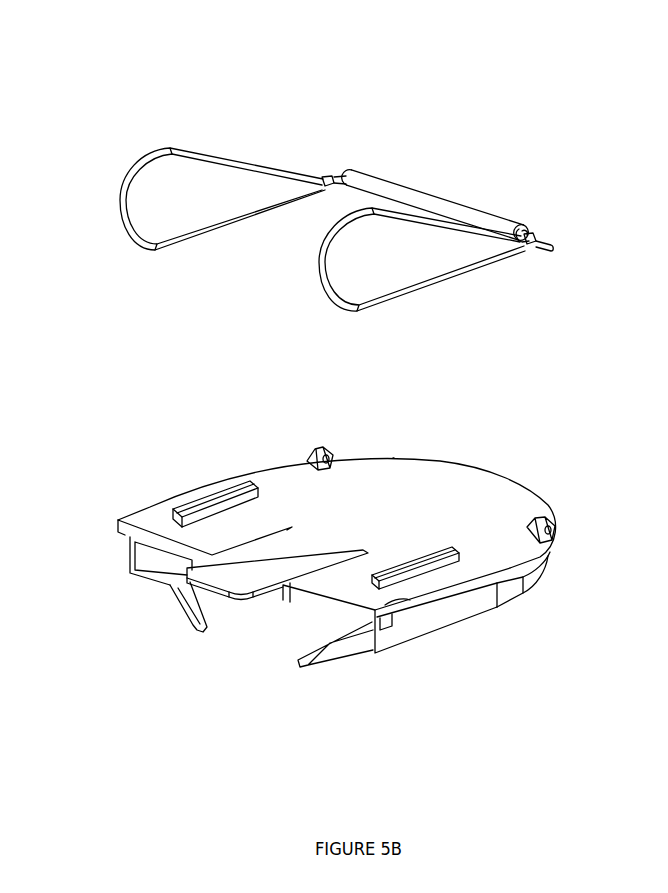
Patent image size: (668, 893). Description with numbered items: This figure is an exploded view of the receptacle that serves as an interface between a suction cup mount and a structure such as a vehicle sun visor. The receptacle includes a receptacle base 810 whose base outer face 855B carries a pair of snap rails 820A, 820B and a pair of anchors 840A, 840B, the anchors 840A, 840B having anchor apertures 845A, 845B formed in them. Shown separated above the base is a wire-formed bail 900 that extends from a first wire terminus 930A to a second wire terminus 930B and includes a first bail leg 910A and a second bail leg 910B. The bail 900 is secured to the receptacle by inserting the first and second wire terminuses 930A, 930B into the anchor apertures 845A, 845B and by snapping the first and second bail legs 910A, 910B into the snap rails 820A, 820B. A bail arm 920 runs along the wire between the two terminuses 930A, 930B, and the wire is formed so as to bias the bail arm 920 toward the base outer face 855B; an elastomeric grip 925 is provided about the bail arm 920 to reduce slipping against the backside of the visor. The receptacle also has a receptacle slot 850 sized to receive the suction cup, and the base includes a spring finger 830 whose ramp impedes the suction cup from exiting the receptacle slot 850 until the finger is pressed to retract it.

The wire-formed bail 900 is at (418, 82).
The first bail leg 910A is at (212, 229).
The second bail leg 910B is at (447, 286).
The elastomeric grip 925 is at (447, 173).
The bail arm 920 is at (529, 231).
The first wire terminus 930A is at (326, 178).
The second wire terminus 930B is at (552, 252).
The receptacle base 810 is at (440, 460).
The base outer face 855B is at (470, 495).
The spring finger 830 is at (280, 588).
The receptacle slot 850 is at (178, 558).
The first snap rail 820A is at (207, 500).
The second snap rail 820B is at (415, 568).
The first anchor 840A is at (318, 452).
The second anchor 840B is at (549, 523).
The first anchor aperture 845A is at (329, 455).
The second anchor aperture 845B is at (558, 545).